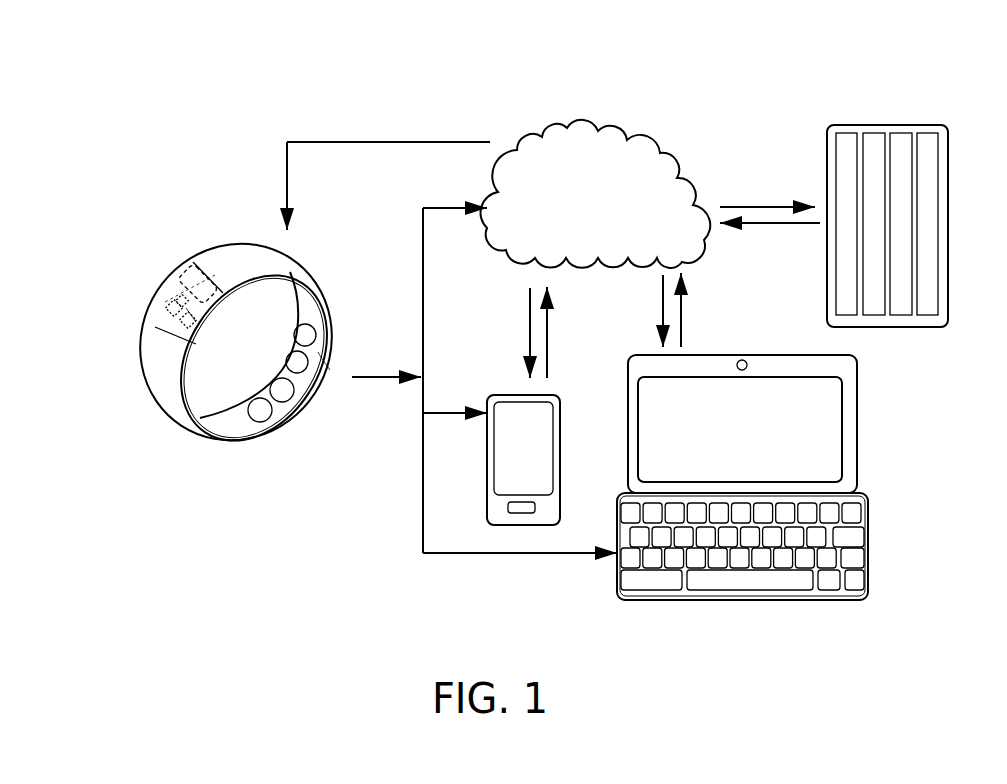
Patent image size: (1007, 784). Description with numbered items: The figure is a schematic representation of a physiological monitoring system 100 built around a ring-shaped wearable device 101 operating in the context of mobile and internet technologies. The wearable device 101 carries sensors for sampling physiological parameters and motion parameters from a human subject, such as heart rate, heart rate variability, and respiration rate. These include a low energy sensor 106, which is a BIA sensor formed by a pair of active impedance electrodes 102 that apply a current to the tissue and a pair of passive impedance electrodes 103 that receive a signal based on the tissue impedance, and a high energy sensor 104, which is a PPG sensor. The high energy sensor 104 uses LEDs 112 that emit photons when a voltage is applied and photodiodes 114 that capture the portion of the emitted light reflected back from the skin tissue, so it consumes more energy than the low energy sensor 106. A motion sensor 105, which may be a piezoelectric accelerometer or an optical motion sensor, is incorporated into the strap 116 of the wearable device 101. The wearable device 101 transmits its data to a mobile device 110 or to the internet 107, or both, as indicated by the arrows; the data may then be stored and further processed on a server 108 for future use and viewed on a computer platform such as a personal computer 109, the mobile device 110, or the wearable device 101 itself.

The physiological monitoring system 100 is at (610, 40).
The wearable device 101 is at (225, 339).
The active impedance electrodes 102 is at (297, 363).
The passive impedance electrodes 103 is at (304, 336).
The high energy sensor 104 is at (167, 302).
The motion sensor 105 is at (197, 288).
The low energy sensor 106 is at (323, 355).
The internet 107 is at (640, 148).
The server 108 is at (847, 168).
The personal computer 109 is at (847, 416).
The mobile device 110 is at (545, 428).
The LEDs 112 is at (162, 303).
The photodiodes 114 is at (193, 306).
The strap 116 is at (173, 398).